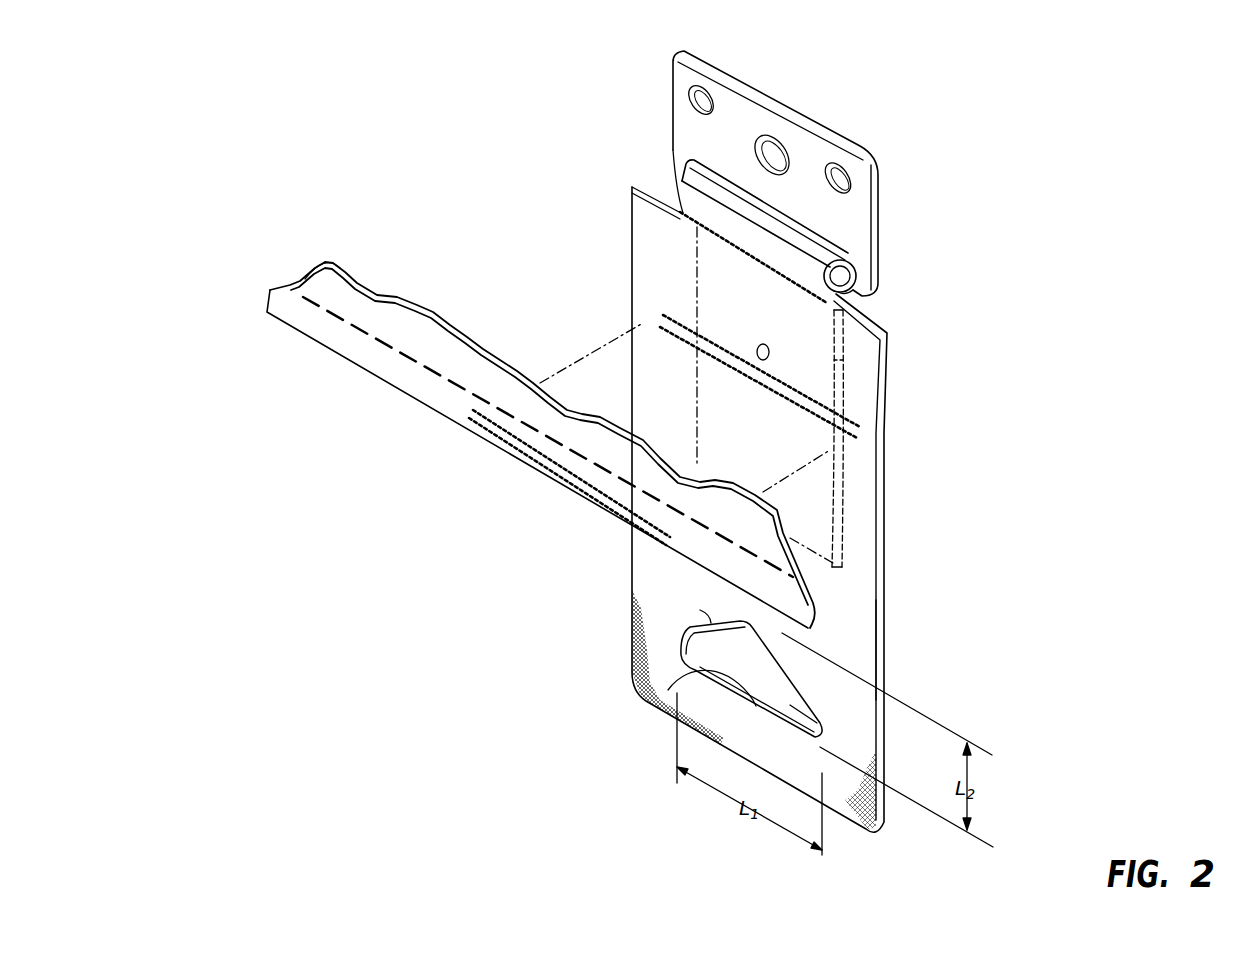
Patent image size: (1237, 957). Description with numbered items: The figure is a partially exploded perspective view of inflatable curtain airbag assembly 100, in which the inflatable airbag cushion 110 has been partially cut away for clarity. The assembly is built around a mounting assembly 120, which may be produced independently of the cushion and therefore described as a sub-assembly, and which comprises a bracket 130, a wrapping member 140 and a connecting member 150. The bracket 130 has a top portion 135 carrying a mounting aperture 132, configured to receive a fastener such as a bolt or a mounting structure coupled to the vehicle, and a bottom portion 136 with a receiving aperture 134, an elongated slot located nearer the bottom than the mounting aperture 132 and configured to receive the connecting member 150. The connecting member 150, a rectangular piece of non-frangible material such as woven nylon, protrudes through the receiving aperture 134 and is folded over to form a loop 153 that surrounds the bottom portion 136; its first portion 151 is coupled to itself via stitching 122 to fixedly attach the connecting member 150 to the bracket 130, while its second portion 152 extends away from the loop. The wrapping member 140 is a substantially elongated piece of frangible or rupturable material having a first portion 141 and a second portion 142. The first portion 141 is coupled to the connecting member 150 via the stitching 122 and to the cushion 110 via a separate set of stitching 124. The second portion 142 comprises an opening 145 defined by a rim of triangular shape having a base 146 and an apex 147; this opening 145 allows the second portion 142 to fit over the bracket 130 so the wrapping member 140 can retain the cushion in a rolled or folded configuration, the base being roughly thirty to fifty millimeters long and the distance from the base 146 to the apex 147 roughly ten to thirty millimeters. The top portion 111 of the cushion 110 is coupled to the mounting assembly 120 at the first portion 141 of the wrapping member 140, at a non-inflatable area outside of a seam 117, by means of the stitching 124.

The airbag assembly 100 is at (550, 53).
The inflatable airbag cushion 110 is at (245, 268).
The top portion 111 is at (377, 320).
The seam 117 is at (327, 310).
The mounting assembly 120 is at (612, 146).
The stitching 122 is at (742, 233).
The stitching 124 is at (658, 345).
The bracket 130 is at (856, 124).
The mounting aperture 132 is at (770, 143).
The receiving aperture 134 is at (853, 265).
The top portion 135 is at (728, 107).
The bottom portion 136 is at (855, 283).
The wrapping member 140 is at (910, 493).
The first portion 141 is at (797, 337).
The second portion 142 is at (863, 612).
The opening 145 is at (823, 730).
The base 146 is at (668, 690).
The apex 147 is at (711, 623).
The connecting member 150 is at (815, 364).
The first portion 151 is at (813, 320).
The second portion 152 is at (813, 513).
The loop 153 is at (818, 240).